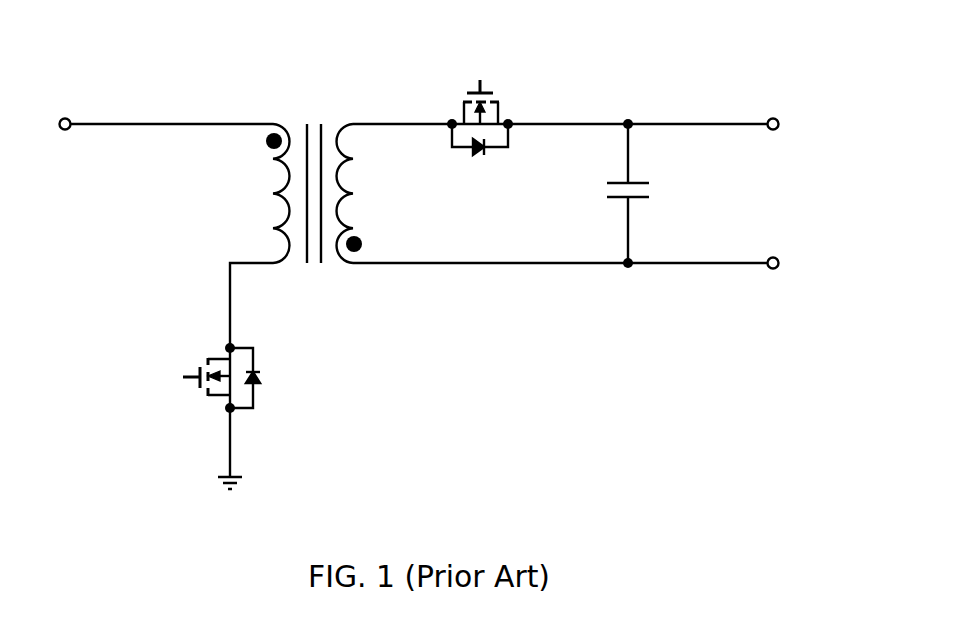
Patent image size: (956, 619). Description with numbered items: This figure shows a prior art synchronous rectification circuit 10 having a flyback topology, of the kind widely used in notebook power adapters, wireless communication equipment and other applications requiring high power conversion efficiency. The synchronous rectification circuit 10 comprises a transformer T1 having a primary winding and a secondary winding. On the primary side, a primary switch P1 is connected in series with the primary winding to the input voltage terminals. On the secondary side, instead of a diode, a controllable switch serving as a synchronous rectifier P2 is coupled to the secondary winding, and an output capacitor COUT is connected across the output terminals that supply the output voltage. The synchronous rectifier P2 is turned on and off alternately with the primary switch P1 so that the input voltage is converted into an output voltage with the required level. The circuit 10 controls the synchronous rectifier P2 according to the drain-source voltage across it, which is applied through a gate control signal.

The synchronous rectification circuit 10 is at (434, 249).
The transformer T1 is at (314, 173).
The primary switch P1 is at (209, 402).
The synchronous rectifier P2 is at (483, 118).
The output capacitor COUT is at (662, 193).